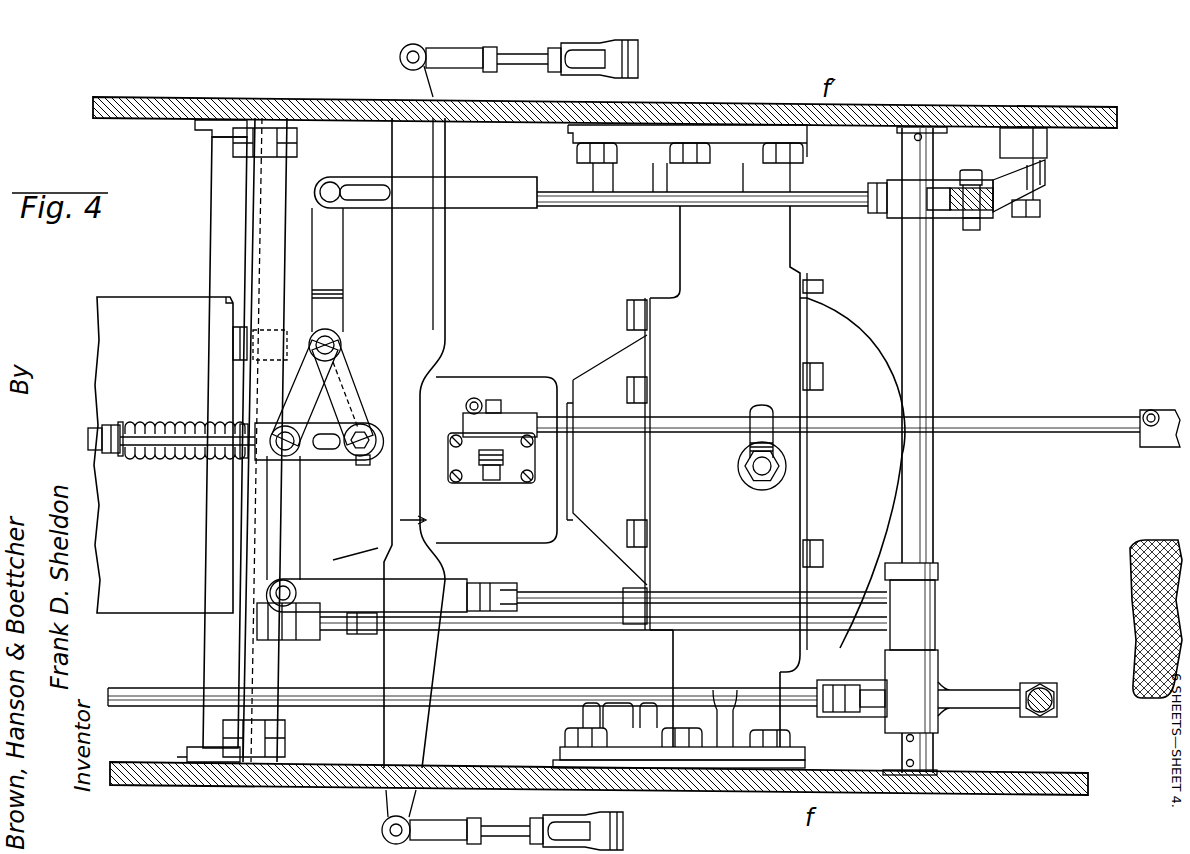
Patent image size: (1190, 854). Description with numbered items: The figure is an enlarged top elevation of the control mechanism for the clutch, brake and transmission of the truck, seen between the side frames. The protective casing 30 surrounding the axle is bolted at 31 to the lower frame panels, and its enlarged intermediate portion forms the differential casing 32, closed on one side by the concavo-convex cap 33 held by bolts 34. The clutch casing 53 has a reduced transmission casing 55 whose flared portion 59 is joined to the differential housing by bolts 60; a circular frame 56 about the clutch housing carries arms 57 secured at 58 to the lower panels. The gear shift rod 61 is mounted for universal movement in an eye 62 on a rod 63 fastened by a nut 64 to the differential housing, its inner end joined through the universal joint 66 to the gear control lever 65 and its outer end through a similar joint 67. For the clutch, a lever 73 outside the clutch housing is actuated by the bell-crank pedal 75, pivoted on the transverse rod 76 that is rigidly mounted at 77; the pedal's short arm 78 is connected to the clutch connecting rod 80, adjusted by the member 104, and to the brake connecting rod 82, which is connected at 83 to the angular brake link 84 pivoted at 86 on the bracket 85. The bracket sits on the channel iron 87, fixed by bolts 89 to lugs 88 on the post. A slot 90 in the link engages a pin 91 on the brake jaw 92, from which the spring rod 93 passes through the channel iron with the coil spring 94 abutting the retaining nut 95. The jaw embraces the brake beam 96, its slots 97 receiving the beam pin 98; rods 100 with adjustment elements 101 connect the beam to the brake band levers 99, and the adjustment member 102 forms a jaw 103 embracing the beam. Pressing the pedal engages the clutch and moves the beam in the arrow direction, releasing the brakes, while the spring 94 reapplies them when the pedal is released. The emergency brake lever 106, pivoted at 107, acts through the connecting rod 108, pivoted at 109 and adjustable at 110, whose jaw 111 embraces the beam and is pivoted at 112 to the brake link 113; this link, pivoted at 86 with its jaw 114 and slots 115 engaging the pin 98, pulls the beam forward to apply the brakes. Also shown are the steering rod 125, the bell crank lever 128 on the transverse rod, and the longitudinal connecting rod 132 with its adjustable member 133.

The protective casing 30 is at (679, 699).
The bolts 31 is at (712, 719).
The differential casing 32 is at (687, 398).
The concavo-convex cap 33 is at (837, 461).
The bolts 34 is at (852, 473).
The clutch casing 53 is at (163, 455).
The transmission casing 55 is at (494, 460).
The circular frame 56 is at (222, 313).
The arms 57 is at (212, 152).
The bolts 58 is at (195, 125).
The flared portion 59 is at (607, 460).
The bolts 60 is at (651, 370).
The gear shift rod 61 is at (676, 422).
The eye 62 is at (758, 421).
The rod 63 is at (742, 466).
The nut 64 is at (738, 470).
The gear control lever 65 is at (492, 483).
The universal joint 66 is at (505, 412).
The universal joint 67 is at (1142, 448).
The lever 73 is at (275, 632).
The pedal 75 is at (1128, 546).
The transverse rod 76 is at (935, 500).
The mounting 77 is at (897, 134).
The short arm 78 is at (900, 643).
The clutch connecting rod 80 is at (733, 631).
The brake connecting rod 82 is at (715, 600).
The connection 83 is at (296, 584).
The brake link 84 is at (283, 518).
The bracket 85 is at (233, 343).
The pivot 86 is at (341, 339).
The channel iron 87 is at (265, 440).
The lugs 88 is at (266, 121).
The bolts 89 is at (298, 145).
The slot 90 is at (285, 457).
The pin 91 is at (247, 458).
The brake jaw 92 is at (247, 427).
The spring rod 93 is at (148, 422).
The coil spring 94 is at (148, 460).
The retaining nut 95 is at (88, 437).
The brake beam 96 is at (389, 441).
The slots 97 is at (328, 452).
The pin 98 is at (370, 436).
The brake band levers 99 is at (640, 60).
The rods 100 is at (522, 66).
The adjustment elements 101 is at (563, 72).
The adjustment member 102 is at (487, 583).
The jaw 103 is at (415, 607).
The adjustment member 104 is at (352, 635).
The emergency brake lever 106 is at (1008, 214).
The pivot 107 is at (1041, 208).
The connecting rod 108 is at (742, 206).
The pivot 109 is at (972, 231).
The adjustment means 110 is at (882, 214).
The jaw 111 is at (480, 200).
The pivot 112 is at (340, 182).
The brake link 113 is at (344, 262).
The jaw 114 is at (368, 388).
The slots 115 is at (368, 466).
The rod 125 is at (1058, 703).
The bell crank lever 128 is at (968, 698).
The connecting rod 132 is at (502, 700).
The adjustable member 133 is at (855, 718).